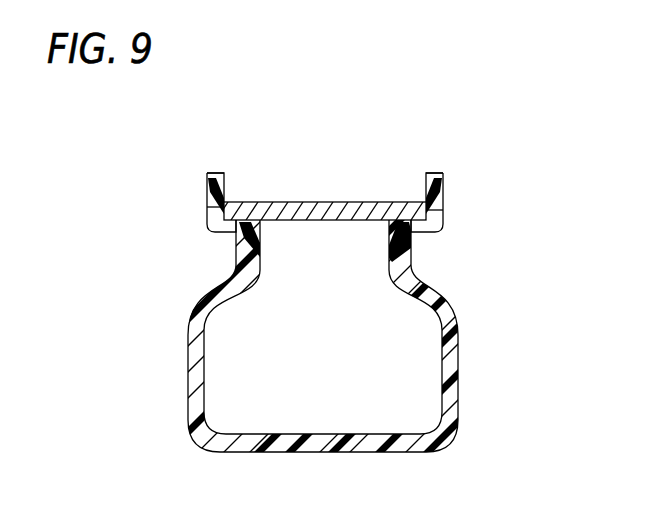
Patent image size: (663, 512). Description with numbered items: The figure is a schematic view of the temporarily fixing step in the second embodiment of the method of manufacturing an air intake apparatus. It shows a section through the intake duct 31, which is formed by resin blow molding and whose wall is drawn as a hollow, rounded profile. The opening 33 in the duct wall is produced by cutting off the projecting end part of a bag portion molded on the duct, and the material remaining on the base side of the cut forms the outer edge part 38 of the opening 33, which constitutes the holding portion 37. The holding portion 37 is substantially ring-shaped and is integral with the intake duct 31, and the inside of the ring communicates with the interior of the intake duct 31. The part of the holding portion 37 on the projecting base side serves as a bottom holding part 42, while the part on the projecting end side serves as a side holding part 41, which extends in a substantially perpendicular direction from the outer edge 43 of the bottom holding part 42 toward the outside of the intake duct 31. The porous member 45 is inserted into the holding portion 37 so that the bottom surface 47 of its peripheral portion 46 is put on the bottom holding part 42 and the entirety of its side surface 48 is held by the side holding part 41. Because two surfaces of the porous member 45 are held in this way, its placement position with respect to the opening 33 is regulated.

The intake duct 31 is at (458, 350).
The opening 33 is at (327, 162).
The holding portion 37 is at (320, 205).
The outer edge part 38 is at (218, 150).
The side holding part 41 is at (207, 184).
The bottom holding part 42 is at (320, 232).
The outer edge 43 is at (207, 220).
The porous member 45 is at (285, 210).
The peripheral portion 46 is at (262, 250).
The bottom surface 47 is at (250, 287).
The side surface 48 is at (207, 207).